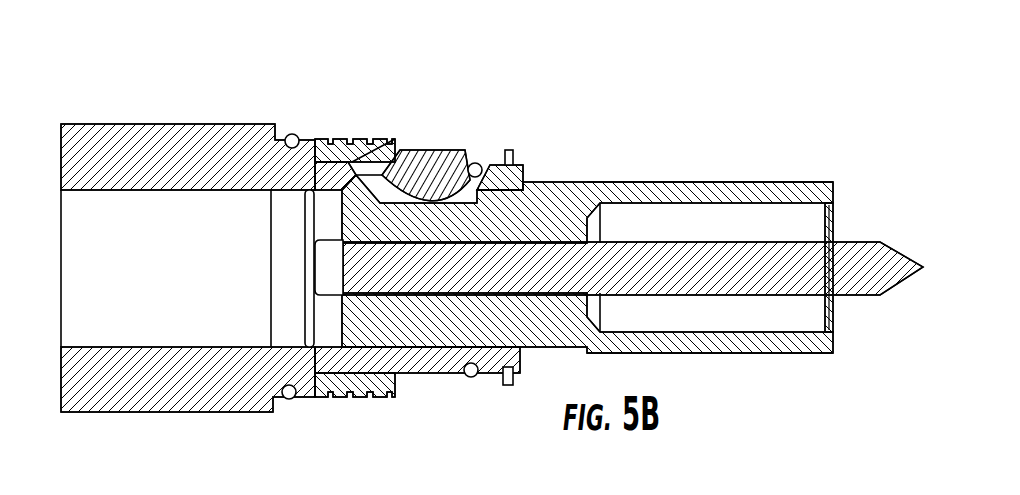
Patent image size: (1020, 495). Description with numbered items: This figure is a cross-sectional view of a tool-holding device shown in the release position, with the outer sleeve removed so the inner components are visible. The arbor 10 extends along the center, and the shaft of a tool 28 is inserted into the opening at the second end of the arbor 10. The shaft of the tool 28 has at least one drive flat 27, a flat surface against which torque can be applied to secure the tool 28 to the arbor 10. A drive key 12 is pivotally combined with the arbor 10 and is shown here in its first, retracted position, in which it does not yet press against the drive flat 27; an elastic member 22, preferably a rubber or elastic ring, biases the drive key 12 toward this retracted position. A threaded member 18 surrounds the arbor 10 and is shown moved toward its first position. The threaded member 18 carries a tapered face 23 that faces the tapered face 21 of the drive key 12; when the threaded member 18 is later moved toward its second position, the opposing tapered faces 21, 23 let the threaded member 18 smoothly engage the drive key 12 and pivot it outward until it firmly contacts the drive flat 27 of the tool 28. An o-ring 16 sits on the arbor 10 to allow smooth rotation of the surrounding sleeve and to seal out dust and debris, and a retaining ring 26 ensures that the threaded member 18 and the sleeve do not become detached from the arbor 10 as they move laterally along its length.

The arbor 10 is at (183, 271).
The drive key 12 is at (460, 149).
The o-ring 16 is at (288, 135).
The threaded member 18 is at (356, 138).
The tapered face 21 is at (398, 155).
The elastic member 22 is at (481, 160).
The tapered face 23 is at (383, 140).
The retaining ring 26 is at (513, 152).
The drive flat 27 is at (481, 207).
The tool 28 is at (790, 227).